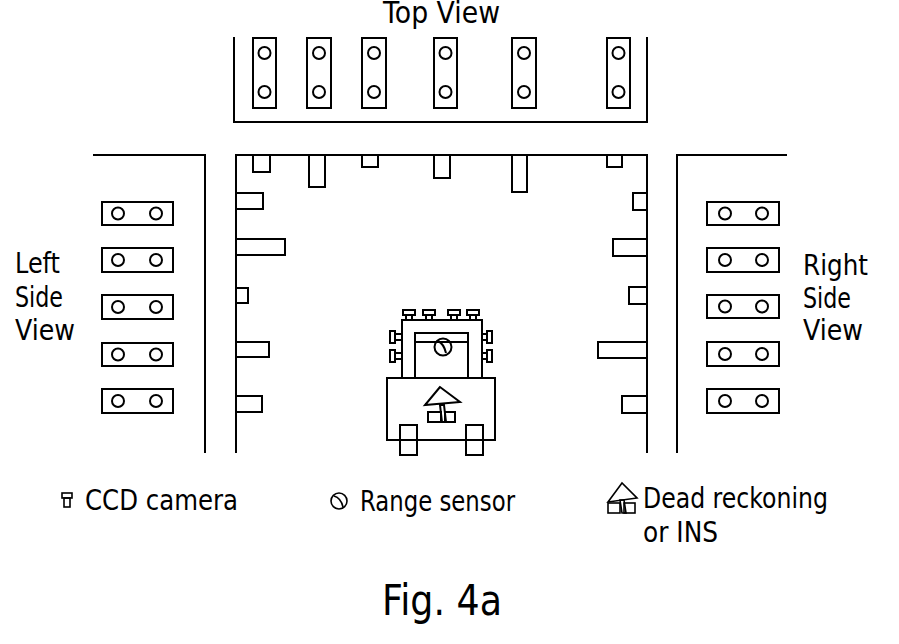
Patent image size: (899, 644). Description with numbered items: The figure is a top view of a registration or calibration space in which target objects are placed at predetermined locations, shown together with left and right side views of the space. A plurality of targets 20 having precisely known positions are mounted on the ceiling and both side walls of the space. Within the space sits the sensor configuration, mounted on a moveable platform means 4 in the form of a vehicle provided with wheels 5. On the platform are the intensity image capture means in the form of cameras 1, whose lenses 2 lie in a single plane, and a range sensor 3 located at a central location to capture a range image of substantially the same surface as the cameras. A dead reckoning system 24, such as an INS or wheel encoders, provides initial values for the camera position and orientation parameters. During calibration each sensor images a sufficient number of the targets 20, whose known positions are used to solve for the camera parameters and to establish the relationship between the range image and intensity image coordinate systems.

The cameras 1 is at (462, 319).
The lenses 2 is at (519, 338).
The range sensor 3 is at (499, 374).
The moveable platform means 4 is at (487, 416).
The wheels 5 is at (490, 452).
The targets 20 is at (493, 141).
The dead reckoning system 24 is at (373, 404).